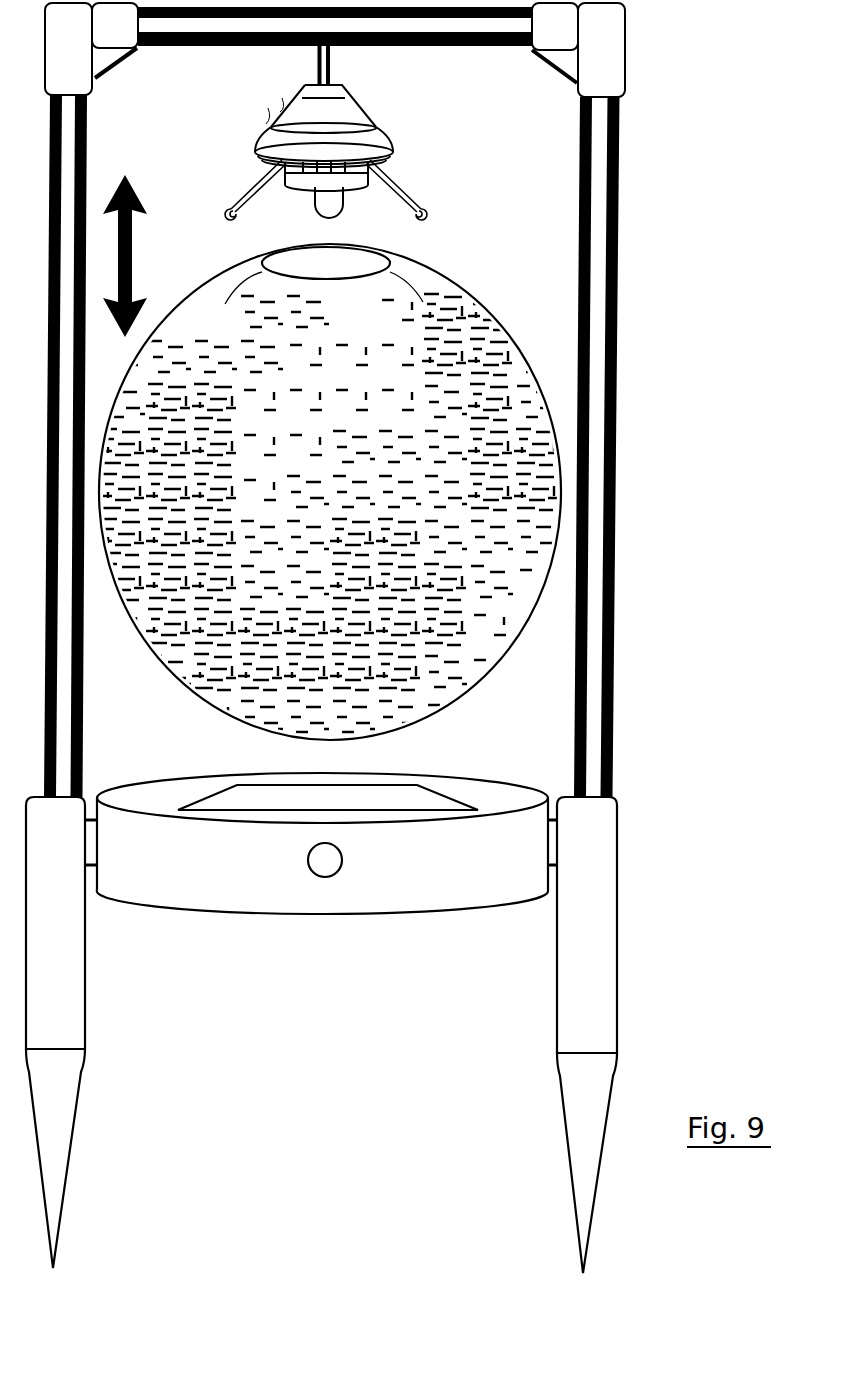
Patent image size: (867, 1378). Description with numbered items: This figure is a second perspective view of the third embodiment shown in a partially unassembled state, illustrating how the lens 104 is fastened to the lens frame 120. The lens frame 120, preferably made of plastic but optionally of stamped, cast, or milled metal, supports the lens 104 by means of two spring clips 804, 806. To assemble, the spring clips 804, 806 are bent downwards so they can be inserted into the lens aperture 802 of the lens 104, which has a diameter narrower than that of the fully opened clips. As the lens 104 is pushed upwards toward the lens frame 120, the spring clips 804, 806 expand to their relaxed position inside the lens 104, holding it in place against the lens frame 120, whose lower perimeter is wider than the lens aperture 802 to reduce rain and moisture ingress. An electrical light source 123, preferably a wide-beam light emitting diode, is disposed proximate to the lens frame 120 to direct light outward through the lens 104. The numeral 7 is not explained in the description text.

The frame corner post 7 is at (601, 52).
The lens 104 is at (330, 465).
The lens frame 120 is at (322, 130).
The electrical light source 123 is at (312, 192).
The lens aperture 802 is at (365, 250).
The spring clip 804 is at (413, 197).
The spring clip 806 is at (233, 203).